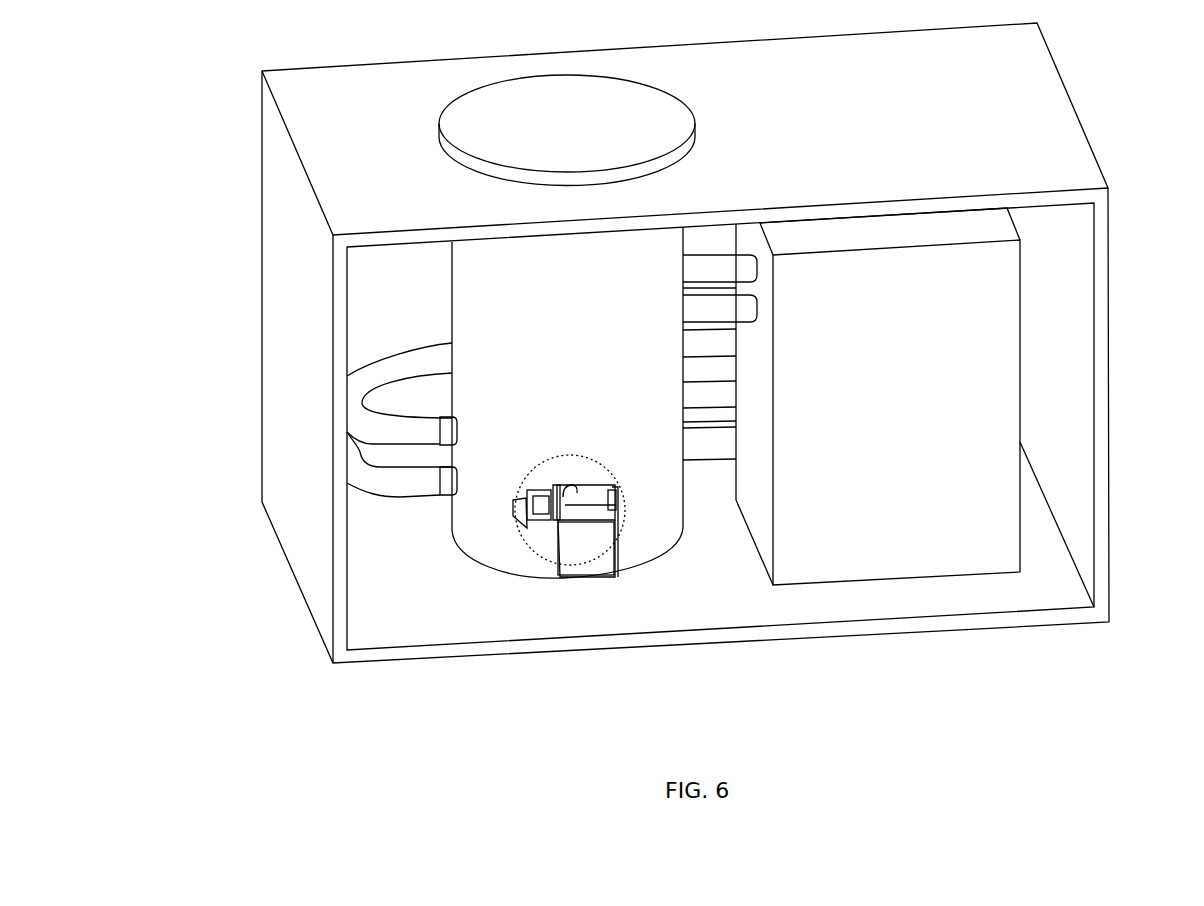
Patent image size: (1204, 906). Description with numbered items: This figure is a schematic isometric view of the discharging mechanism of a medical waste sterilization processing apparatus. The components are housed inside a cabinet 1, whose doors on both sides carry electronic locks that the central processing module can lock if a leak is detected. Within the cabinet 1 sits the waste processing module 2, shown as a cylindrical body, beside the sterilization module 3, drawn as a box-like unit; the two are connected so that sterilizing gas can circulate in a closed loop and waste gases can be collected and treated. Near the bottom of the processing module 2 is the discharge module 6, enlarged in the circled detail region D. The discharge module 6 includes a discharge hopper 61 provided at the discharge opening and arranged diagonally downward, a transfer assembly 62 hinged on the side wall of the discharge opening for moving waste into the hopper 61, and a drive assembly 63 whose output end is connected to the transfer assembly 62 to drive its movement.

The cabinet 1 is at (1096, 248).
The waste processing module 2 is at (402, 317).
The sterilization module 3 is at (1028, 480).
The discharge module 6 is at (508, 512).
The discharge hopper 61 is at (617, 563).
The transfer assembly 62 is at (560, 530).
The drive assembly 63 is at (517, 527).
The detail region D is at (580, 563).